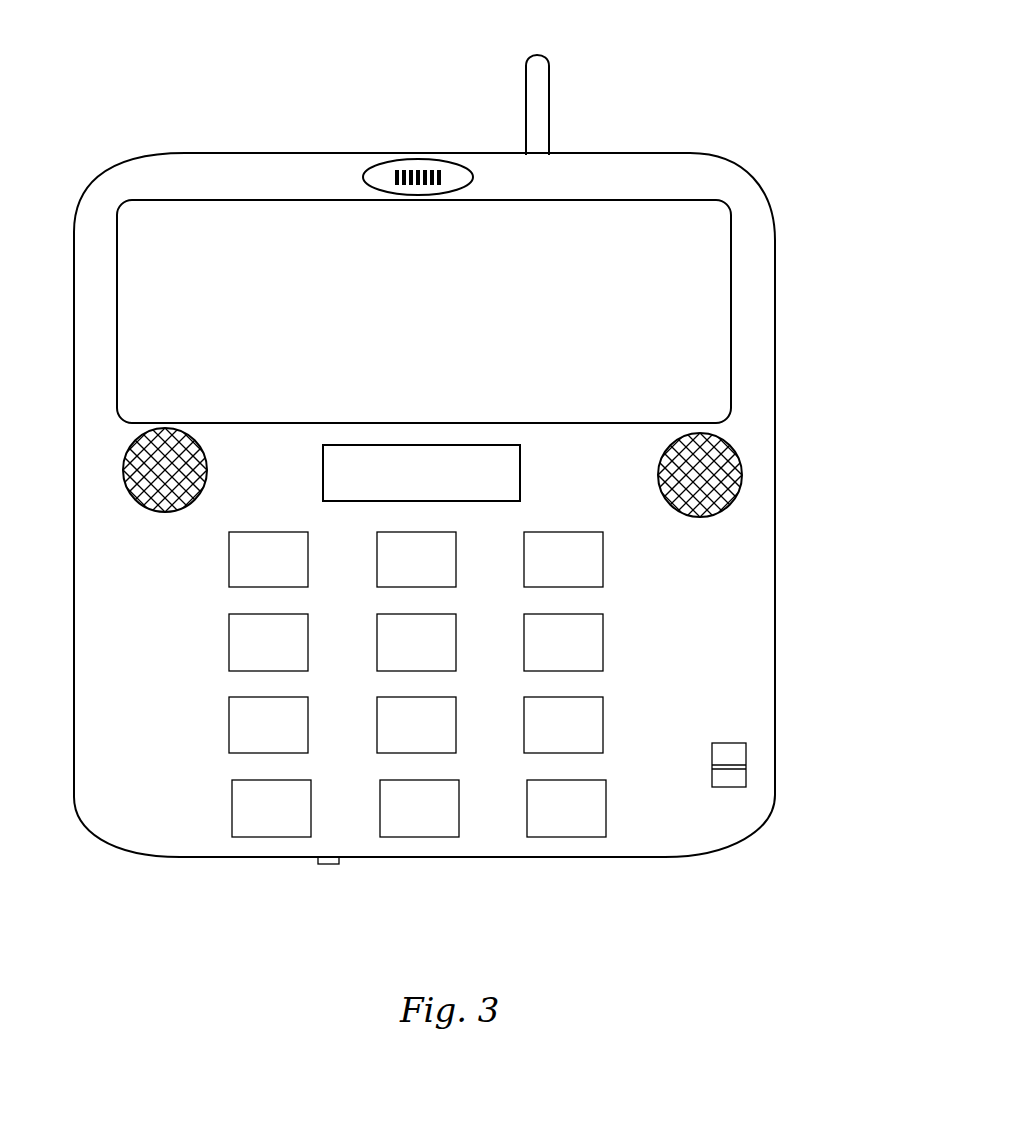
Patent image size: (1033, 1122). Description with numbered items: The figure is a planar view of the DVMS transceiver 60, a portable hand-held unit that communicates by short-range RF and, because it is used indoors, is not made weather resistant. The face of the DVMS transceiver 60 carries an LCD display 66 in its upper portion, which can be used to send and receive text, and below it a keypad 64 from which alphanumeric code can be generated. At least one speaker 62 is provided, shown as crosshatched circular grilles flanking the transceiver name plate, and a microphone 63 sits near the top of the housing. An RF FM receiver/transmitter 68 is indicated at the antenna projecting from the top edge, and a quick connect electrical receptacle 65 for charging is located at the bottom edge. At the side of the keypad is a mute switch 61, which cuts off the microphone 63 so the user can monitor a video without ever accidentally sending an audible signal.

The DVMS transceiver 60 is at (616, 927).
The mute switch 61 is at (746, 766).
The speaker 62 is at (157, 470).
The microphone 63 is at (425, 170).
The keypad 64 is at (685, 626).
The quick connect electrical receptacle 65 is at (334, 868).
The LCD display 66 is at (574, 324).
The RF FM receiver/transmitter 68 is at (545, 106).